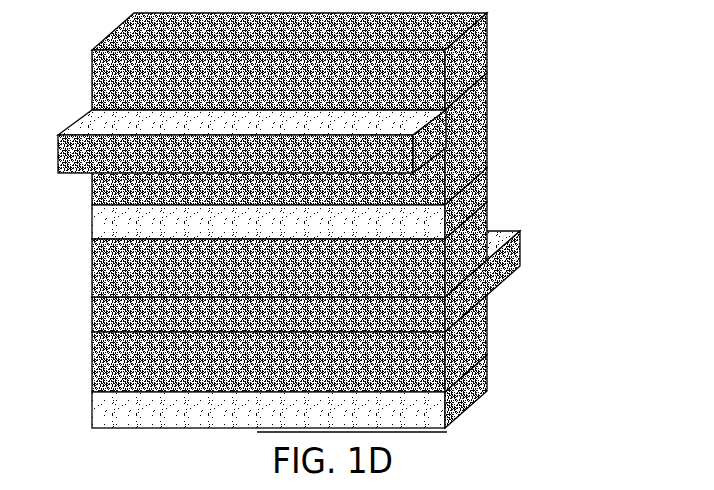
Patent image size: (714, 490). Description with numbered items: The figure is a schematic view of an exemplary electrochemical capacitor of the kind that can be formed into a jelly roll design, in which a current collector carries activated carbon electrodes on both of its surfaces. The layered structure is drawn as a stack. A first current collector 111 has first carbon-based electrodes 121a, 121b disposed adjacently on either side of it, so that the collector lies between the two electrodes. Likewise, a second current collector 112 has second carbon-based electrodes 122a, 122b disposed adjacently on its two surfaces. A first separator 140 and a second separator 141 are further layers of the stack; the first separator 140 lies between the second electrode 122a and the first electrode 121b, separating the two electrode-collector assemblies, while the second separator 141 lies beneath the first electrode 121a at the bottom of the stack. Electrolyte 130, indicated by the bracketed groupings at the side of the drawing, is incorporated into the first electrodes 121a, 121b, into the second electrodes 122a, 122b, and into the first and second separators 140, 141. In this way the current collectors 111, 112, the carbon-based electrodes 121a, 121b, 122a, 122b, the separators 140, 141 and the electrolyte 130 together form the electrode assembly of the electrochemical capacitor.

The first current collector 111 is at (313, 326).
The second current collector 112 is at (290, 167).
The first carbon-based electrode 121a is at (315, 375).
The first carbon-based electrode 121b is at (314, 280).
The second carbon-based electrode 122a is at (324, 200).
The second carbon-based electrode 122b is at (324, 93).
The electrolyte 130 is at (505, 13).
The first separator 140 is at (313, 233).
The second separator 141 is at (312, 421).